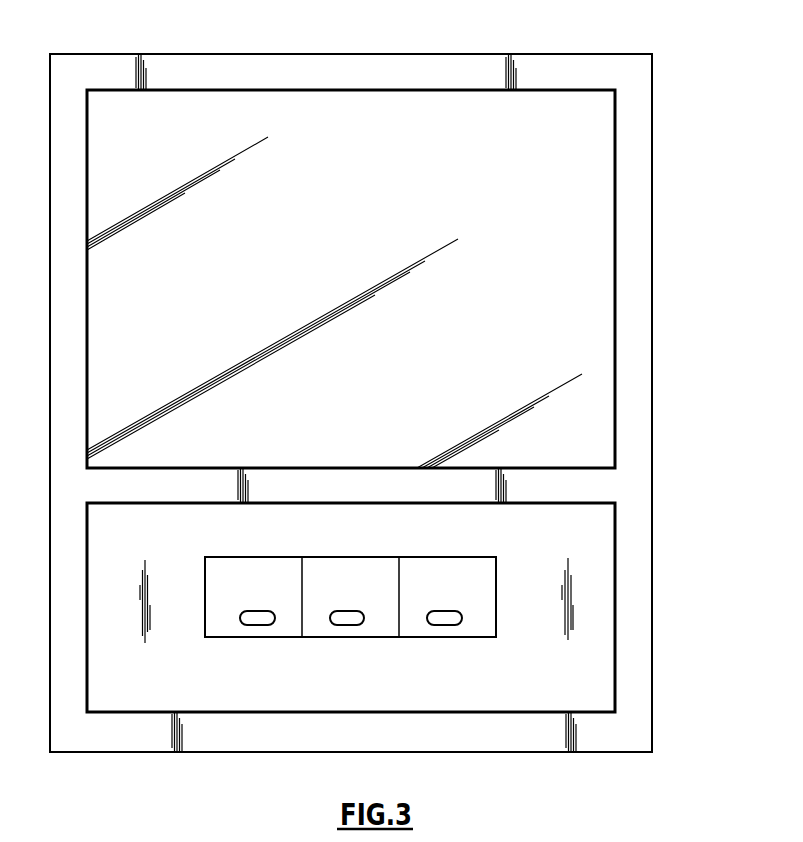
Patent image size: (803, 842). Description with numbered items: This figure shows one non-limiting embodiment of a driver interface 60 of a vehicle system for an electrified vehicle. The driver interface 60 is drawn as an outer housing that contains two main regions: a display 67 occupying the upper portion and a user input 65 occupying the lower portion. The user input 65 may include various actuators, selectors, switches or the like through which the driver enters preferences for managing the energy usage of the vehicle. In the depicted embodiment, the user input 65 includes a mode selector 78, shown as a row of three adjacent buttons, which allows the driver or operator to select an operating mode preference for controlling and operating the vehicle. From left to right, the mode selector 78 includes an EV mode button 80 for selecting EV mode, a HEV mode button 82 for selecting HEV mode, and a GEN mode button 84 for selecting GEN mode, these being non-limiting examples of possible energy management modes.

The driver interface 60 is at (662, 189).
The display 67 is at (555, 113).
The user input 65 is at (497, 692).
The mode selector 78 is at (347, 548).
The EV mode button 80 is at (283, 622).
The HEV mode button 82 is at (373, 623).
The GEN mode button 84 is at (470, 623).